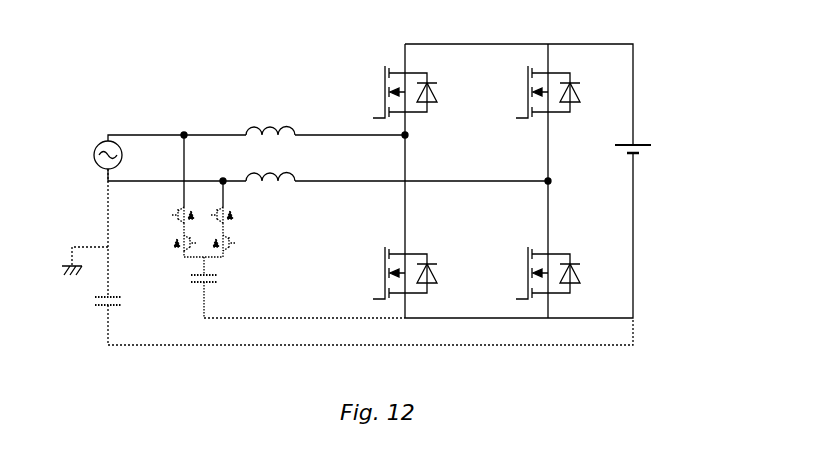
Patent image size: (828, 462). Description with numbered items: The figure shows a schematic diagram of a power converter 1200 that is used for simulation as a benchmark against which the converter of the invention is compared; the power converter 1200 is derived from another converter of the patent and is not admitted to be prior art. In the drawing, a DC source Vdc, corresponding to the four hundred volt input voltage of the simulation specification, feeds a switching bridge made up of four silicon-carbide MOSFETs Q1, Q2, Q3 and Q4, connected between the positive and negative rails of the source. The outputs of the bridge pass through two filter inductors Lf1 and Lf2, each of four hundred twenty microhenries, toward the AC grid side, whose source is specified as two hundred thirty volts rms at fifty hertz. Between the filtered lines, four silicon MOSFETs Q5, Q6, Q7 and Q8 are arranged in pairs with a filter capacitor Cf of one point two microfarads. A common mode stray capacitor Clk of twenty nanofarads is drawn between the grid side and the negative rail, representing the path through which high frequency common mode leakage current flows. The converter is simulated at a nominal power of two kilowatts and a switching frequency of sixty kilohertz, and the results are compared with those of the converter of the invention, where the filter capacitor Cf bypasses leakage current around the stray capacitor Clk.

The power converter 1200 is at (166, 61).
The SiC MOSFET Q1 is at (393, 92).
The SiC MOSFET Q2 is at (536, 92).
The SiC MOSFET Q3 is at (393, 273).
The SiC MOSFET Q4 is at (538, 273).
The Si MOSFET Q5 is at (171, 216).
The Si MOSFET Q6 is at (172, 239).
The Si MOSFET Q7 is at (234, 216).
The Si MOSFET Q8 is at (234, 239).
The filter inductor Lf1 is at (270, 117).
The filter inductor Lf2 is at (270, 164).
The filter capacitor Cf is at (211, 284).
The common mode stray capacitor Clk is at (120, 310).
The DC voltage source Vdc is at (646, 147).